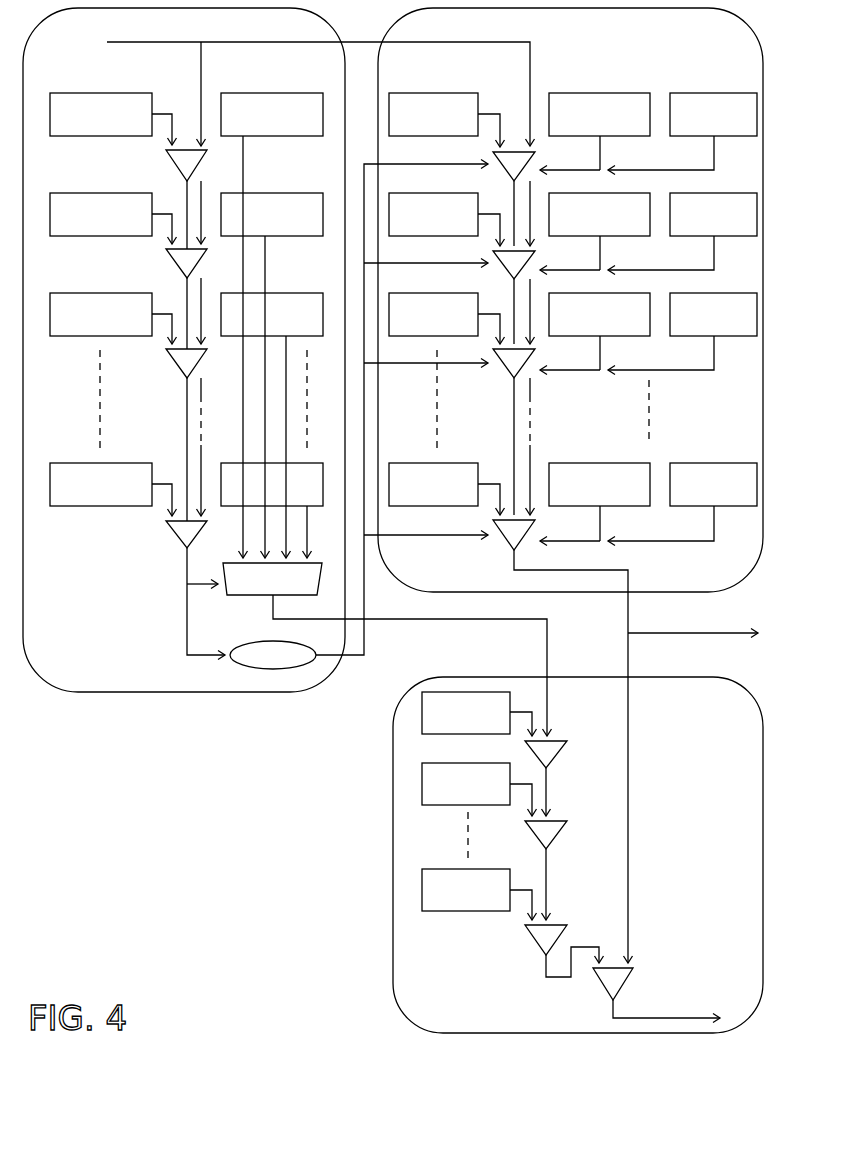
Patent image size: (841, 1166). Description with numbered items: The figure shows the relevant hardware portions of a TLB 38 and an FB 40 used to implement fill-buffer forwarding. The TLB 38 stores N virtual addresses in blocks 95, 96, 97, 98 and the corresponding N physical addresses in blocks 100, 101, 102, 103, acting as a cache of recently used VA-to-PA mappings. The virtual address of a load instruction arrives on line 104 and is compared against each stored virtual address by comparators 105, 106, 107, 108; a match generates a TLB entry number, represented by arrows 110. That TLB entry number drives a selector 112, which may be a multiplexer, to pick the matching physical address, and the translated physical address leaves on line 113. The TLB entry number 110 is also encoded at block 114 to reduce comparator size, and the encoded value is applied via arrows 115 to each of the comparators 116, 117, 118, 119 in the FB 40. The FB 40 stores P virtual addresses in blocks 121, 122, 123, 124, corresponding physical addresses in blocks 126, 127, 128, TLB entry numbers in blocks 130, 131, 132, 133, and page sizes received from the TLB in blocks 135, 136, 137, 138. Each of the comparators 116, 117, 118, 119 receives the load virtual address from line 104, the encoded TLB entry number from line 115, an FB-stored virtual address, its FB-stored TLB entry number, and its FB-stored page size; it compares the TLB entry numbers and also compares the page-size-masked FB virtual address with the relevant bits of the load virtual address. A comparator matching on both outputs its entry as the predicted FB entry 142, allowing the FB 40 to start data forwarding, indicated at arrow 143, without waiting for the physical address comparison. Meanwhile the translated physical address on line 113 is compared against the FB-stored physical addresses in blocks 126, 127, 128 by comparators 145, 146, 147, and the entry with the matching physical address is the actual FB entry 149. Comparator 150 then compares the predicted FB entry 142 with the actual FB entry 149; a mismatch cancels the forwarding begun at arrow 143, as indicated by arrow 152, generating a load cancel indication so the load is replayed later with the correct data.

The TLB 38 is at (135, 692).
The FB 40 is at (437, 592).
The TLB virtual address block 95 is at (95, 93).
The TLB virtual address block 96 is at (78, 193).
The TLB virtual address block 97 is at (78, 293).
The TLB virtual address block 98 is at (72, 463).
The TLB physical address block 100 is at (278, 93).
The TLB physical address block 101 is at (278, 193).
The TLB physical address block 102 is at (278, 293).
The TLB physical address block 103 is at (228, 463).
The load virtual address line 104 is at (248, 42).
The comparator 105 is at (166, 165).
The comparator 106 is at (166, 265).
The comparator 107 is at (170, 368).
The comparator 108 is at (166, 535).
The TLB entry number 110 is at (187, 598).
The selector 112 is at (253, 596).
The translated physical address line 113 is at (547, 655).
The encode block 114 is at (268, 670).
The encoded TLB entry number arrows 115 is at (364, 658).
The comparator 116 is at (500, 170).
The comparator 117 is at (500, 270).
The comparator 118 is at (502, 375).
The comparator 119 is at (503, 552).
The FB virtual address block 121 is at (440, 93).
The FB virtual address block 122 is at (440, 237).
The FB virtual address block 123 is at (433, 293).
The FB virtual address block 124 is at (456, 463).
The FB physical address block 126 is at (455, 735).
The FB physical address block 127 is at (442, 806).
The FB physical address block 128 is at (462, 912).
The FB TLB entry number block 130 is at (705, 93).
The FB TLB entry number block 131 is at (737, 238).
The FB TLB entry number block 132 is at (737, 338).
The FB TLB entry number block 133 is at (710, 463).
The FB page size block 135 is at (593, 93).
The FB page size block 136 is at (627, 237).
The FB page size block 137 is at (630, 336).
The FB page size block 138 is at (615, 463).
The predicted FB entry 142 is at (628, 793).
The start data forwarding arrow 143 is at (656, 632).
The comparator 145 is at (556, 755).
The comparator 146 is at (556, 835).
The comparator 147 is at (530, 940).
The actual FB entry 149 is at (590, 947).
The comparator 150 is at (630, 985).
The cancel data forwarding arrow 152 is at (722, 968).